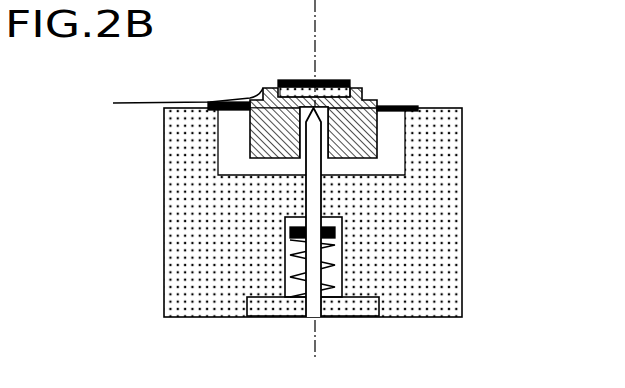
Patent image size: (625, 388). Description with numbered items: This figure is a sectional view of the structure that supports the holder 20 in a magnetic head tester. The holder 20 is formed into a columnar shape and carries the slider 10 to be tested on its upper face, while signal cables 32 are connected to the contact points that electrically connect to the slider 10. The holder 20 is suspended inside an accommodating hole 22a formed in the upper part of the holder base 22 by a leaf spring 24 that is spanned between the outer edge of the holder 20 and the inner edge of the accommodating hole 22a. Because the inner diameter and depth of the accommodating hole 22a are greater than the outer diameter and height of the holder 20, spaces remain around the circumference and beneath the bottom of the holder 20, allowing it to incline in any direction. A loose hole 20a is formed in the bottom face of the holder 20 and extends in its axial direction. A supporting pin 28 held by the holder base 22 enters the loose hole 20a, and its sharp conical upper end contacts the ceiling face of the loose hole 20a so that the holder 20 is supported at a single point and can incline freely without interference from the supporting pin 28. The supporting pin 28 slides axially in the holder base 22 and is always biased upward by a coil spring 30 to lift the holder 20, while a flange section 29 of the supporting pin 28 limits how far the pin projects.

The slider 10 is at (280, 78).
The holder 20 is at (365, 106).
The loose hole 20a is at (303, 147).
The holder base 22 is at (415, 213).
The accommodating hole 22a is at (227, 152).
The leaf spring 24 is at (412, 110).
The supporting pin 28 is at (306, 197).
The flange section 29 is at (336, 236).
The coil spring 30 is at (298, 277).
The signal cables 32 is at (137, 103).